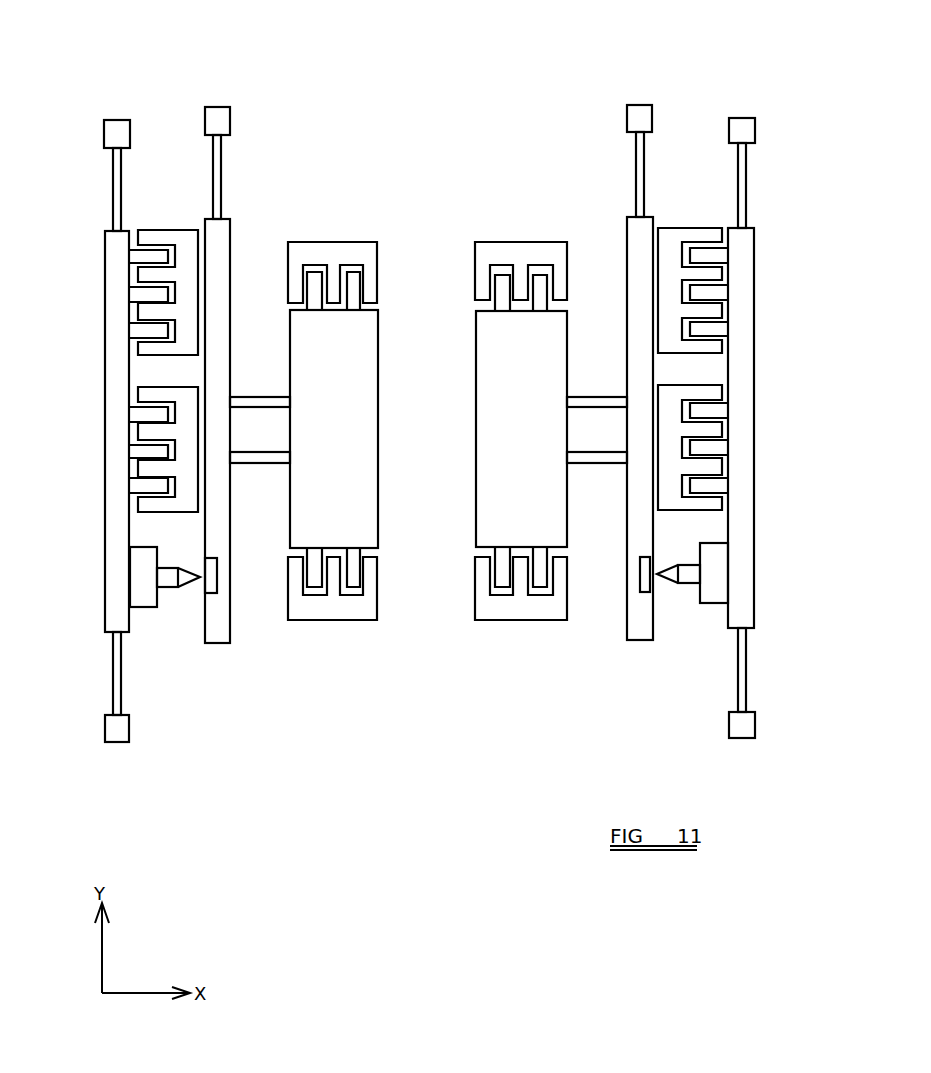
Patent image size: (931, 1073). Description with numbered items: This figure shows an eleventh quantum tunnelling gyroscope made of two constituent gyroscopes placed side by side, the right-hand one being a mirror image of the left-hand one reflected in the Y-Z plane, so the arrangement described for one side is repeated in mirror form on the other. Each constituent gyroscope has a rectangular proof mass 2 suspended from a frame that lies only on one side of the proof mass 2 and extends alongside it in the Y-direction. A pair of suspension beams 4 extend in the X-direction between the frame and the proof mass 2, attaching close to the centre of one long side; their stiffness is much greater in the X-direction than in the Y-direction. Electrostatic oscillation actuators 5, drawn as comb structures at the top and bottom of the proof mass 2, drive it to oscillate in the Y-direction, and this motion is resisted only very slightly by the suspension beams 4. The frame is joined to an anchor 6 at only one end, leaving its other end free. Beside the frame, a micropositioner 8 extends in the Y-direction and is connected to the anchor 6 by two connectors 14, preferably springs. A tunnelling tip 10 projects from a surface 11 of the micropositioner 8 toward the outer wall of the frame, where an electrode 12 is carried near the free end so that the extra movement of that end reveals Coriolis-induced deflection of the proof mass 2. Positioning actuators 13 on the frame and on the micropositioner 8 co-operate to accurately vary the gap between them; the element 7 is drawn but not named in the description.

The proof mass 2 is at (376, 398).
The suspension beams 4 is at (252, 407).
The electrostatic oscillation actuators 5 is at (355, 270).
The anchor 6 is at (123, 120).
The support beam 7 is at (217, 193).
The micropositioner 8 is at (113, 408).
The tunnelling tip 10 is at (167, 590).
The surface of the micropositioner 11 is at (137, 570).
The electrode 12 is at (207, 587).
The positioning actuators 13 is at (140, 275).
The connectors 14 is at (118, 195).